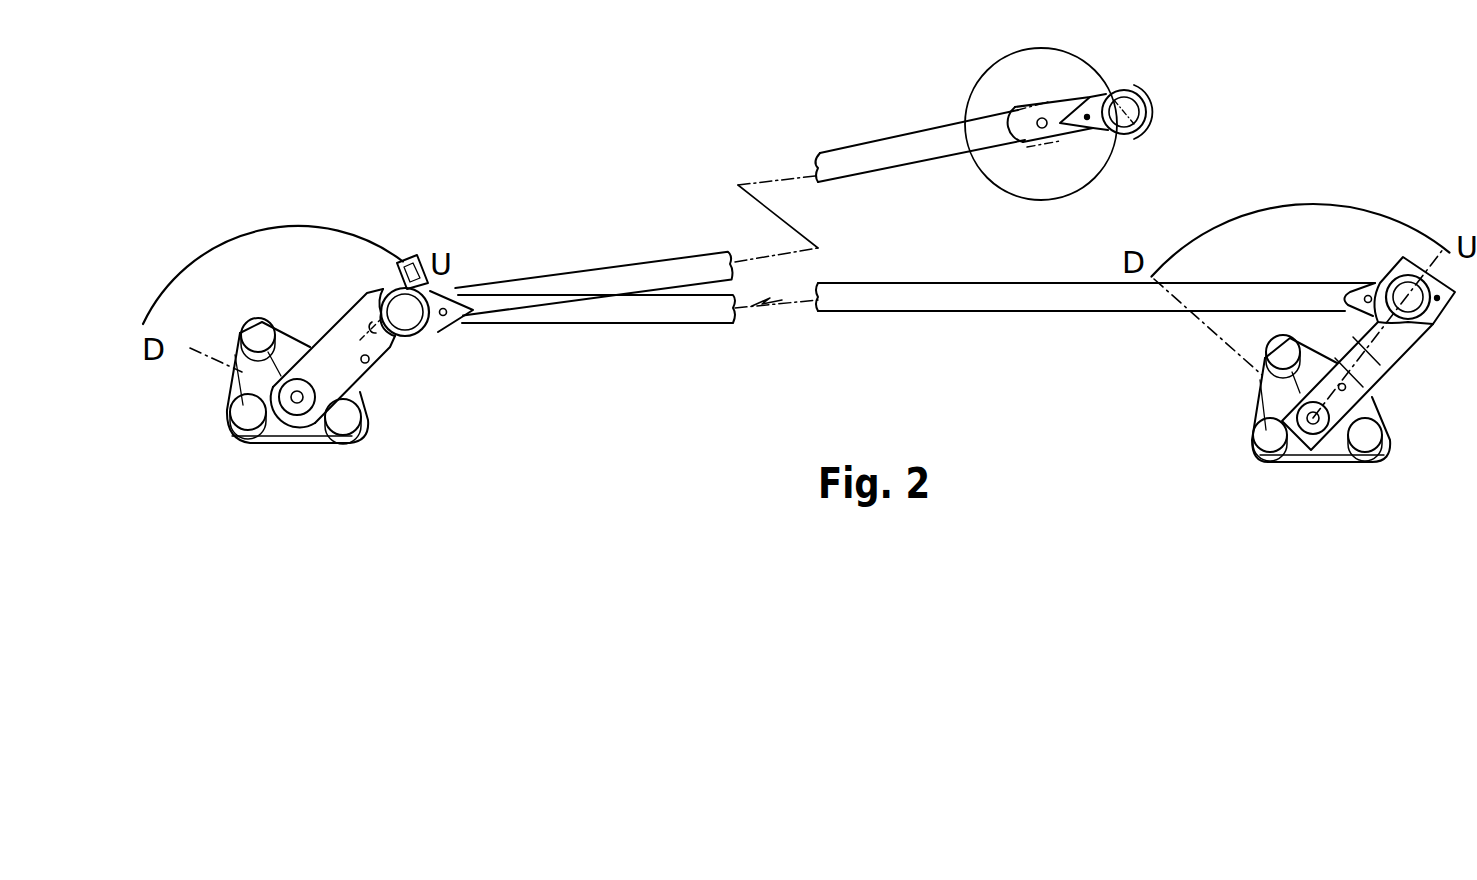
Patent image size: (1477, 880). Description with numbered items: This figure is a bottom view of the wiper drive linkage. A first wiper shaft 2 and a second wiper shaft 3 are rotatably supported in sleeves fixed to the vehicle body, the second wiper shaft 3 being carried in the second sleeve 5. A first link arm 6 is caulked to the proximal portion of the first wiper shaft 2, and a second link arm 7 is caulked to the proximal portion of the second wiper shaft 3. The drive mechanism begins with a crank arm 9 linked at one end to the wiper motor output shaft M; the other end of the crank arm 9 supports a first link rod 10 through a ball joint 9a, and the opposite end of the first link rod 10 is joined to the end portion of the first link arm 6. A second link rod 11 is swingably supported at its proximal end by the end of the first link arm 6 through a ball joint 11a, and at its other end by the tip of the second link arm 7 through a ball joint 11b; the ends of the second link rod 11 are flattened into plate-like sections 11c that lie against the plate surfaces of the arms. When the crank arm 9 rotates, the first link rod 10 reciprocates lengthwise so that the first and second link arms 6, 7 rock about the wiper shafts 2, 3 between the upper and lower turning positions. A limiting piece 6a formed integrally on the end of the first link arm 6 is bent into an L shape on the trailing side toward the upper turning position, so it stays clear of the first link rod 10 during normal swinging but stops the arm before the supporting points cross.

The first wiper shaft 2 is at (306, 412).
The second wiper shaft 3 is at (1310, 428).
The second sleeve 5 is at (1372, 458).
The first link arm 6 is at (390, 348).
The limiting piece 6a is at (416, 258).
The second link arm 7 is at (1397, 345).
The crank arm 9 is at (1056, 100).
The ball joint 9a is at (1149, 110).
The first link rod 10 is at (876, 150).
The second link rod 11 is at (950, 300).
The ball joint 11a is at (430, 292).
The ball joint 11b is at (1407, 290).
The plate-like section 11c is at (447, 330).
The wiper motor output shaft M is at (1043, 115).